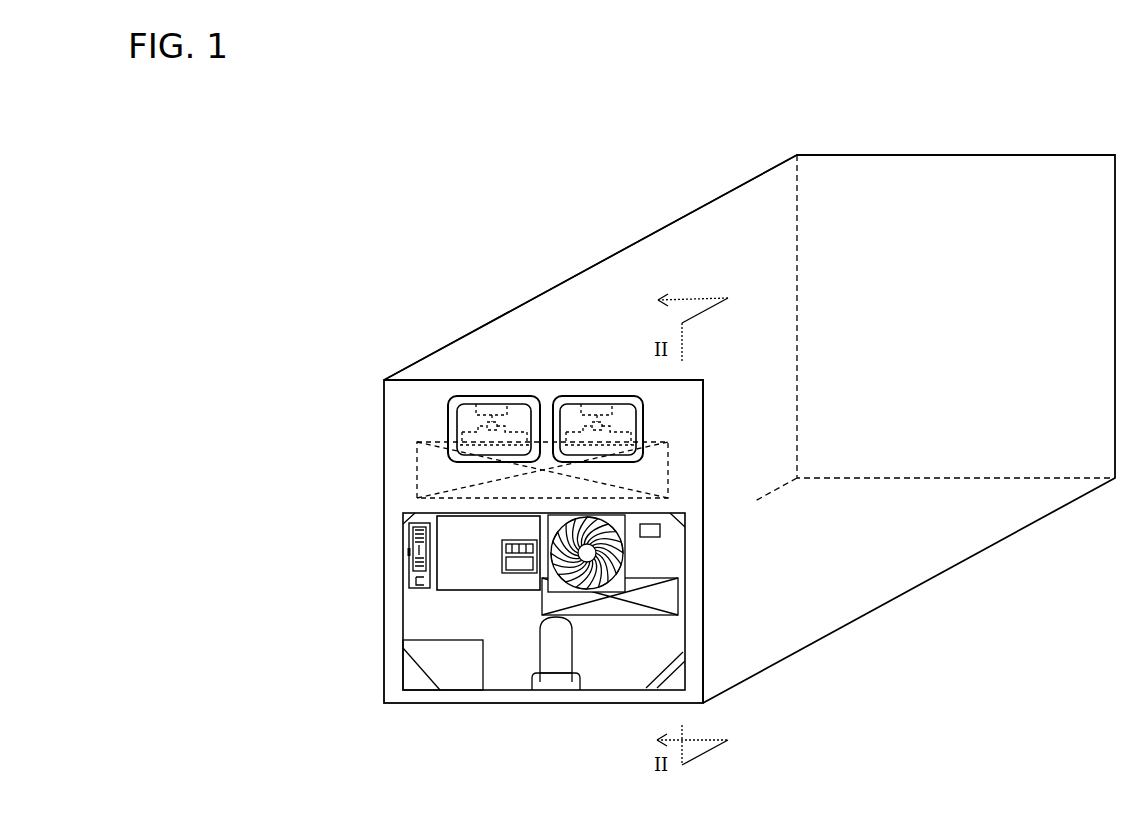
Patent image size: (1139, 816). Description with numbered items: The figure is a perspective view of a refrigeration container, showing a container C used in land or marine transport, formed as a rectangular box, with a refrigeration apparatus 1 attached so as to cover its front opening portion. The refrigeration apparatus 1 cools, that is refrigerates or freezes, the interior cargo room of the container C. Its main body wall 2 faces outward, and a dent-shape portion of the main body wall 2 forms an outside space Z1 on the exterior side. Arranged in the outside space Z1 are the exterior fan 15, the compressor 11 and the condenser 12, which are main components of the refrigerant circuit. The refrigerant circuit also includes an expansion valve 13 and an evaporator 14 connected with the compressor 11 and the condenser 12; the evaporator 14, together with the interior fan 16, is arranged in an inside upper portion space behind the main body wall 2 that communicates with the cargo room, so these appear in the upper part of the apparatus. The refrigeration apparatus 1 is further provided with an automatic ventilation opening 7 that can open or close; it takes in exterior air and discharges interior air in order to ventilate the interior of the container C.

The refrigeration apparatus 1 is at (528, 705).
The main body wall 2 is at (413, 410).
The container C is at (592, 264).
The automatic ventilation opening 7 is at (401, 556).
The compressor 11 is at (548, 638).
The condenser 12 is at (678, 596).
The expansion valve 13 is at (660, 530).
The evaporator 14 is at (668, 469).
The exterior fan 15 is at (625, 545).
The interior fan 16 is at (559, 398).
The outside space Z1 is at (432, 613).